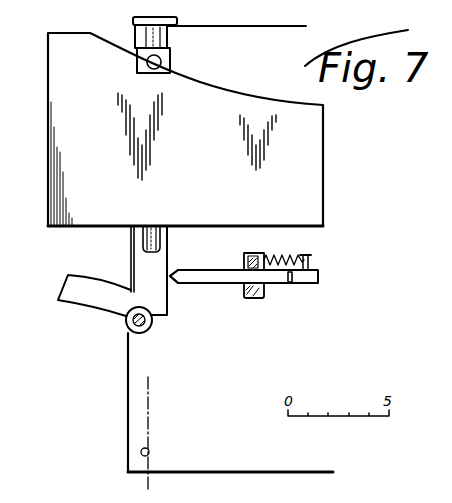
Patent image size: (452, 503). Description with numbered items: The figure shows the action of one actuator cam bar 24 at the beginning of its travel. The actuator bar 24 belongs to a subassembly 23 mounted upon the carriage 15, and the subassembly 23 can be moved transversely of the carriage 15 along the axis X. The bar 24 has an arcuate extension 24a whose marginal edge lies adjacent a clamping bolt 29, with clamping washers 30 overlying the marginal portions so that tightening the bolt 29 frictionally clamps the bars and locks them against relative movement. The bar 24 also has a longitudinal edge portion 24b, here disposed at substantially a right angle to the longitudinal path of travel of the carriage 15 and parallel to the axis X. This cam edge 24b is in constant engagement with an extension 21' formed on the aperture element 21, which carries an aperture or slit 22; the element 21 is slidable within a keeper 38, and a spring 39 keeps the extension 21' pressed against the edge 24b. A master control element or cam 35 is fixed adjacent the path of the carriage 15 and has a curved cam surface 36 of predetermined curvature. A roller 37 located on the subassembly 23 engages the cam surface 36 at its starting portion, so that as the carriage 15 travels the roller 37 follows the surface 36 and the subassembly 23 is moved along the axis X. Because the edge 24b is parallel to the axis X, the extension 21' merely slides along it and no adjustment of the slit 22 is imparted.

The carriage 15 is at (128, 405).
The aperture element 21 is at (274, 280).
The extension 21' is at (189, 300).
The aperture or slit 22 is at (292, 277).
The subassembly 23 is at (172, 68).
The actuator cam bar 24 is at (132, 268).
The arcuate extension 24a is at (65, 290).
The longitudinal edge portion 24b is at (168, 236).
The clamping bolt 29 is at (140, 335).
The clamping washers 30 is at (125, 327).
The master control element or cam 35 is at (296, 127).
The curved cam surface 36 is at (214, 90).
The roller 37 is at (161, 60).
The keeper 38 is at (248, 300).
The spring 39 is at (274, 254).
The axis X is at (150, 452).